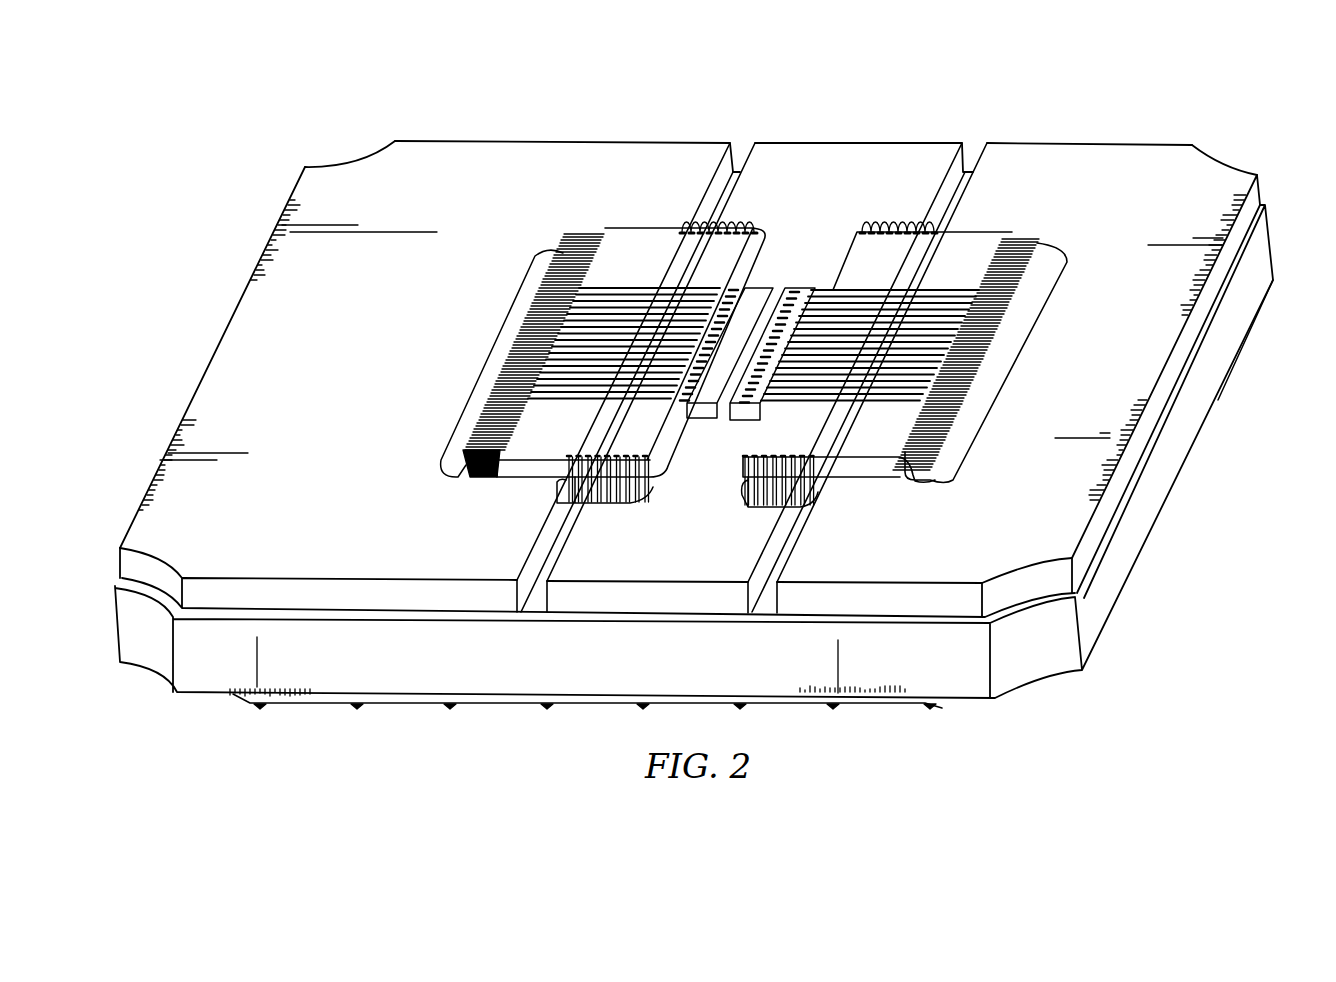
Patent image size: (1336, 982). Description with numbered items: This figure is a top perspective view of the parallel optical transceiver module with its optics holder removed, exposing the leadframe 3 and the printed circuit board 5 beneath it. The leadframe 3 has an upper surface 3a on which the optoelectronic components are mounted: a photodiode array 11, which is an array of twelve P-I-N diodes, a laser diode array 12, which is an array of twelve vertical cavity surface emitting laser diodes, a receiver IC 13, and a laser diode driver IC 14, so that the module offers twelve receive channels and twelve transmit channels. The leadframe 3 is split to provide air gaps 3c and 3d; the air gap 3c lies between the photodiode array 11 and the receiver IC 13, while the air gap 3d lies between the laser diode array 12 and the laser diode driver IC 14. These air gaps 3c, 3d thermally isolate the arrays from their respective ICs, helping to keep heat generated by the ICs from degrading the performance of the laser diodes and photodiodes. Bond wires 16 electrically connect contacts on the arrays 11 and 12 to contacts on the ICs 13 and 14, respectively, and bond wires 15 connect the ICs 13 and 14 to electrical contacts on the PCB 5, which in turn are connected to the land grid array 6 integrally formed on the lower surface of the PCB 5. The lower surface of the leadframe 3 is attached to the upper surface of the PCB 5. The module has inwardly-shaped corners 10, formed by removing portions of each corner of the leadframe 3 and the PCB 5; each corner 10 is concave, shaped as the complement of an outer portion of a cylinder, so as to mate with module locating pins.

The leadframe 3 is at (1010, 158).
The upper surface 3a is at (480, 155).
The air gap 3c is at (532, 604).
The air gap 3d is at (763, 602).
The printed circuit board 5 is at (1267, 243).
The land grid array 6 is at (1233, 383).
The inwardly-shaped corner 10 is at (343, 153).
The photodiode array 11 is at (758, 290).
The laser diode array 12 is at (785, 292).
The receiver IC 13 is at (647, 247).
The laser diode driver IC 14 is at (960, 257).
The bond wires 15 is at (612, 498).
The bond wires 16 is at (741, 287).